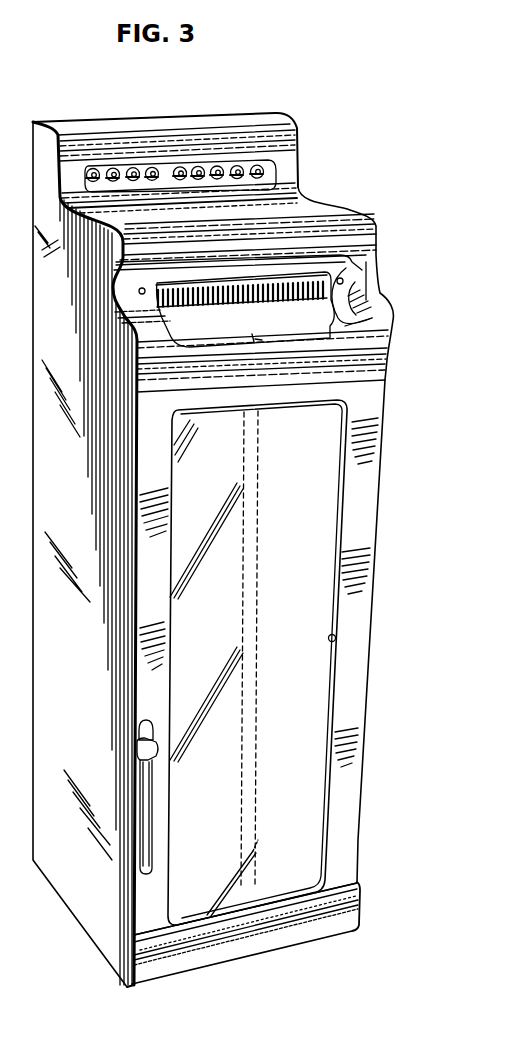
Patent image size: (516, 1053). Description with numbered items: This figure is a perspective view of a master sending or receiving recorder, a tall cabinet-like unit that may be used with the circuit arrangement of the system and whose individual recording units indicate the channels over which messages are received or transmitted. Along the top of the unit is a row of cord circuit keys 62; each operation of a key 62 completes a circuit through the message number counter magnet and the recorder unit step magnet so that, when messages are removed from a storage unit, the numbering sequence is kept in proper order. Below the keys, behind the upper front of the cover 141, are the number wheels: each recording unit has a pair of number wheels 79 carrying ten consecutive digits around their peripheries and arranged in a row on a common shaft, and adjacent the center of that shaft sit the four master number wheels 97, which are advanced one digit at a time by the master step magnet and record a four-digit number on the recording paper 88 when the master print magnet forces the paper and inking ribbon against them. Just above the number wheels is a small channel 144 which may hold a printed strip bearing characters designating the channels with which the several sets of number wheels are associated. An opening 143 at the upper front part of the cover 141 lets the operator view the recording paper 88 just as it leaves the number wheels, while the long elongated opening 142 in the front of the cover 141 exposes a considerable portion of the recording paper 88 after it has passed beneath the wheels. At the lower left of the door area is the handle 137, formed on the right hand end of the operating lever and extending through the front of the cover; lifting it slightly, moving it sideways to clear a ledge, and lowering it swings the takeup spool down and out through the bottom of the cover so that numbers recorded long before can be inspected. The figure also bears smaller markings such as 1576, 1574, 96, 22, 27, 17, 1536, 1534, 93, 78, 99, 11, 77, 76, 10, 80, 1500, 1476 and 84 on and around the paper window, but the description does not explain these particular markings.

The cord circuit key 62 is at (229, 168).
The channel 144 is at (347, 268).
The opening 143 is at (340, 333).
The number wheels 79 is at (218, 306).
The master number wheels 97 is at (234, 306).
The recording paper 88 is at (327, 495).
The elongated opening 142 is at (335, 633).
The handle 137 is at (148, 744).
The cover 141 is at (256, 937).
The guide track 1576 is at (253, 410).
The guide track 1574 is at (253, 426).
The record carriage 96 is at (274, 410).
The frame member 22 is at (194, 429).
The frame member 27 is at (212, 433).
The record magazine 17 is at (210, 616).
The carriage part 1536 is at (251, 610).
The carriage part 1534 is at (251, 623).
The turntable assembly 93 is at (272, 621).
The mechanism part 78 is at (172, 803).
The mechanism part 99 is at (185, 805).
The base frame 11 is at (207, 807).
The mechanism part 77 is at (173, 827).
The mechanism part 76 is at (172, 837).
The base plate 10 is at (205, 838).
The mechanism part 80 is at (280, 796).
The selector linkage 1500 is at (247, 808).
The lower guide 1476 is at (250, 878).
The tone arm lever 84 is at (236, 871).